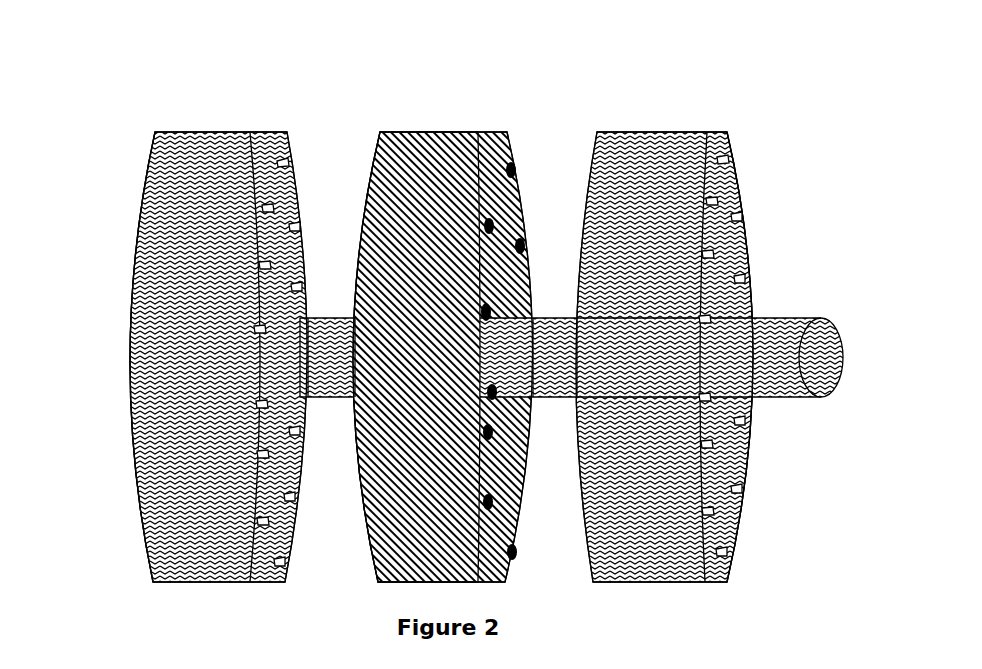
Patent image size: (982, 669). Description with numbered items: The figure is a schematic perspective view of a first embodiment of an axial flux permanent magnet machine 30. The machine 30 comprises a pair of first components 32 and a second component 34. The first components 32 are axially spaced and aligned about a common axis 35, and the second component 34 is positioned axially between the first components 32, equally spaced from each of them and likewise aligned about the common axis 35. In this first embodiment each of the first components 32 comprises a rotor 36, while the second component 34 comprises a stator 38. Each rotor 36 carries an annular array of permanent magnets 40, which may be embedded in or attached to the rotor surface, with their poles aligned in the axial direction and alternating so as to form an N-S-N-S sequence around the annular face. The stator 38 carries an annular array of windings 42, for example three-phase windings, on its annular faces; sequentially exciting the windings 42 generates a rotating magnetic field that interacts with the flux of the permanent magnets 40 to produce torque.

The axial flux permanent magnet machine 30 is at (448, 304).
The first components 32 is at (220, 132).
The second component 34 is at (443, 130).
The common axis 35 is at (777, 398).
The rotor 36 is at (148, 160).
The stator 38 is at (372, 150).
The permanent magnets 40 is at (750, 218).
The windings 42 is at (527, 198).